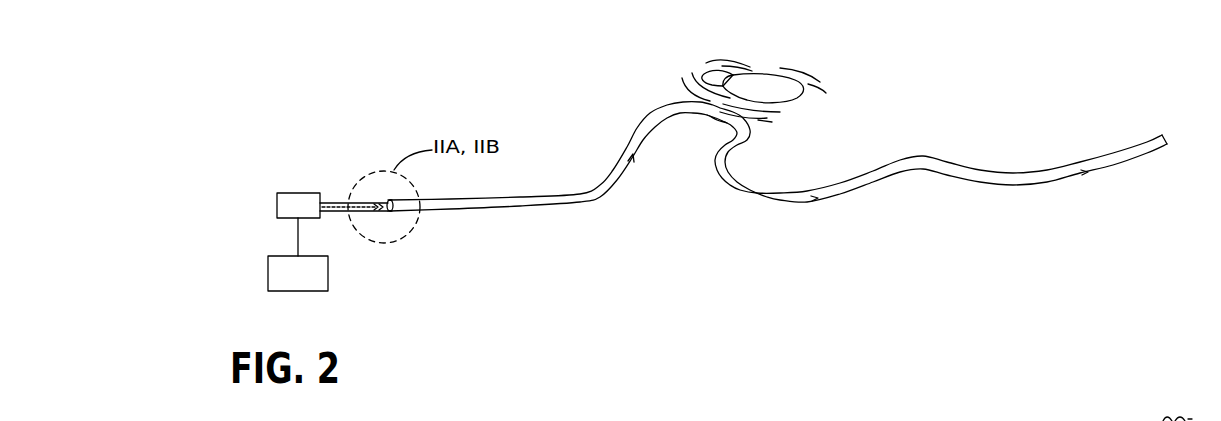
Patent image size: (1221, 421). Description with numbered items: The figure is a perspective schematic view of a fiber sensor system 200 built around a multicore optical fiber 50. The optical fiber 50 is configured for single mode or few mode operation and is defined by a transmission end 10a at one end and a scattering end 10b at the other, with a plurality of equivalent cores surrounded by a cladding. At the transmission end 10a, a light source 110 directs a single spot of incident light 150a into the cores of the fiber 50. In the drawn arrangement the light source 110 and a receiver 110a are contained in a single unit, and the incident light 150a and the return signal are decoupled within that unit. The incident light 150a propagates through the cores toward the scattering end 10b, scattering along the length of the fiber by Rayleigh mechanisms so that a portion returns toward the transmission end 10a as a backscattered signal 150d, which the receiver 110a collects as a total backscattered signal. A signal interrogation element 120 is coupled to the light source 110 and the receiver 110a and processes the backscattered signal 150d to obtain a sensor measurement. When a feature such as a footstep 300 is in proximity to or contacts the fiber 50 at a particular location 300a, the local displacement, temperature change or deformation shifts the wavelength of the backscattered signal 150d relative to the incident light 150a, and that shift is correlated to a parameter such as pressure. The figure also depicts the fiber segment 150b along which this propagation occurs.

The fiber sensor system 200 is at (1113, 88).
The optical fiber 50 is at (870, 173).
The transmission end 10a is at (387, 199).
The scattering end 10b is at (1170, 138).
The light source 110 is at (263, 197).
The receiver 110a is at (288, 192).
The signal interrogation element 120 is at (268, 276).
The incident light 150a is at (347, 202).
The elongated catheter body 150b is at (615, 182).
The backscattered signal 150d is at (367, 208).
The footstep 300 is at (757, 82).
The location 300a is at (716, 117).